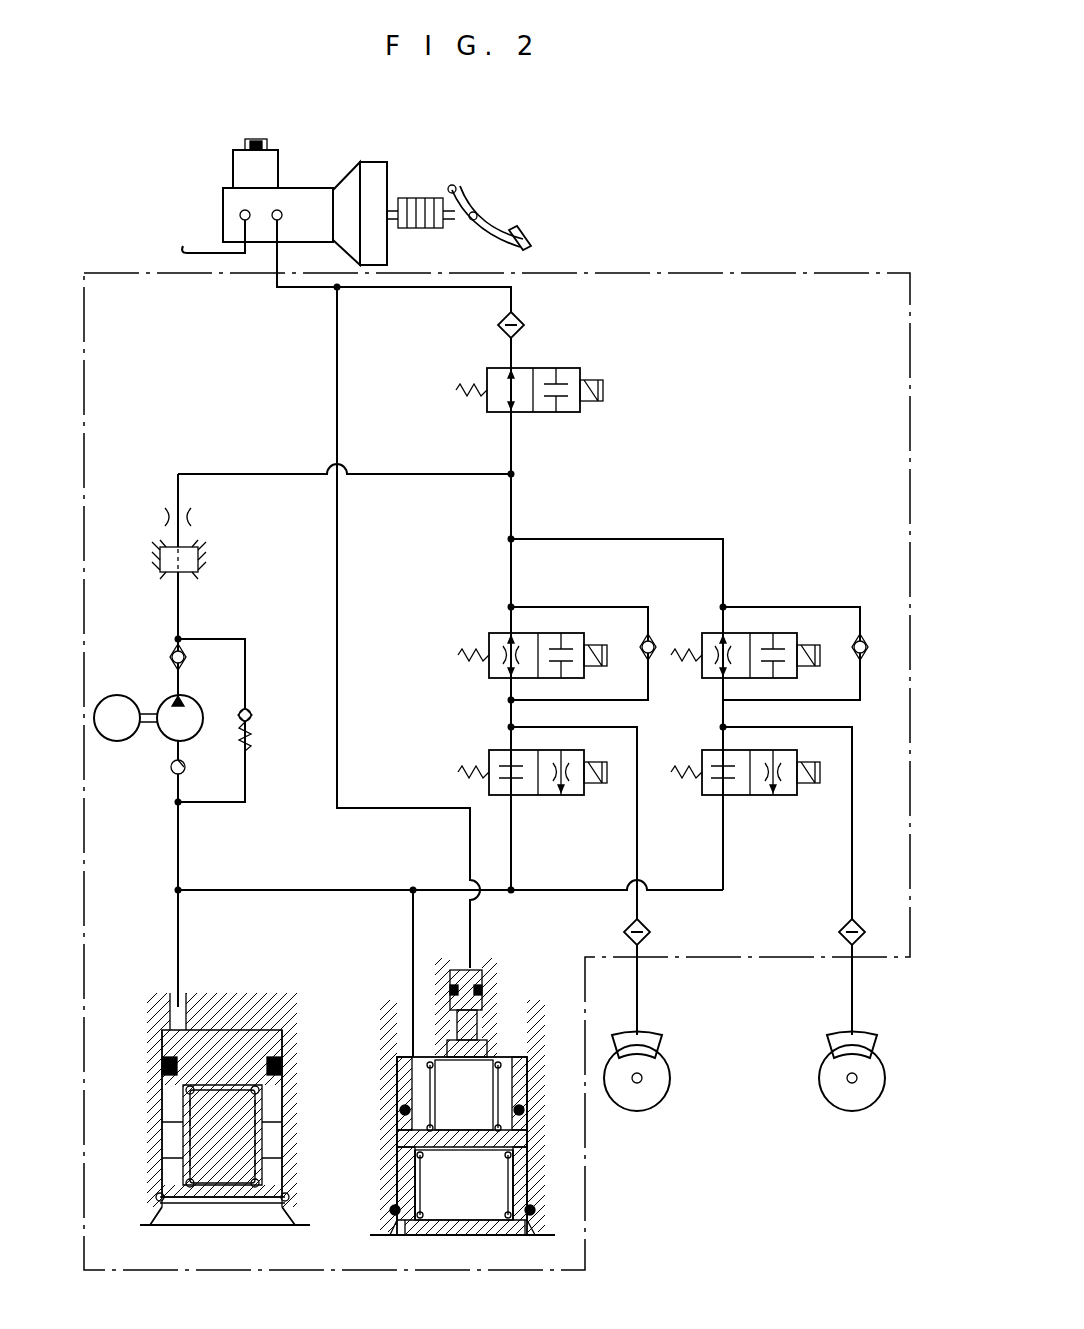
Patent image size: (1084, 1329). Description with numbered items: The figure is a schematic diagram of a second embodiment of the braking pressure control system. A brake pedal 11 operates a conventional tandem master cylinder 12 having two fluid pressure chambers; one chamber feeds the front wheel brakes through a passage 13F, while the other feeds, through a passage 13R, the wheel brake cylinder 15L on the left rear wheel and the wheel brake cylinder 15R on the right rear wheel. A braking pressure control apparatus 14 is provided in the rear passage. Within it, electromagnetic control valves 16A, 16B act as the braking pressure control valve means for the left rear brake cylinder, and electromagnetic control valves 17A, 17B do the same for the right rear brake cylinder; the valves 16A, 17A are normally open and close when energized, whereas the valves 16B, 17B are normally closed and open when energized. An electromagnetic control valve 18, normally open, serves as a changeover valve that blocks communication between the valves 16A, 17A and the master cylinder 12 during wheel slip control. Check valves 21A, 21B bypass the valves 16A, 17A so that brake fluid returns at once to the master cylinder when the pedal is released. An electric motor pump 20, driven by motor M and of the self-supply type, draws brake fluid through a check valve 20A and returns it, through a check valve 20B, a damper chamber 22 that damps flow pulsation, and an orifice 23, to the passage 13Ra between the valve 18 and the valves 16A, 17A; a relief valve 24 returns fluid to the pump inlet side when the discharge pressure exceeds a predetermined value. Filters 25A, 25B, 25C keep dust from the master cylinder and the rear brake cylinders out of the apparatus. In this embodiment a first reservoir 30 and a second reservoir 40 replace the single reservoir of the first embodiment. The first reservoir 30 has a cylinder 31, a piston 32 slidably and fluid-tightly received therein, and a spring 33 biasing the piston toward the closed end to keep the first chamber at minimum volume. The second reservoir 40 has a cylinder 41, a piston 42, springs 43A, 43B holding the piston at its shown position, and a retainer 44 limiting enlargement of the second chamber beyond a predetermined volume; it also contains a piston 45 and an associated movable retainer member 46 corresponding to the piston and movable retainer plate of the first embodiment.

The brake pedal 11 is at (497, 213).
The tandem master cylinder 12 is at (307, 188).
The passage 13F is at (205, 252).
The passage 13R is at (276, 258).
The passage 13Ra is at (513, 514).
The braking pressure control apparatus 14 is at (742, 273).
The wheel brake cylinder 15L is at (648, 1044).
The wheel brake cylinder 15R is at (860, 1050).
The electromagnetic control valve 16A is at (488, 630).
The electromagnetic control valve 16B is at (487, 750).
The electromagnetic control valve 17A is at (701, 678).
The electromagnetic control valve 17B is at (701, 797).
The electromagnetic control valve 18 is at (548, 415).
The electric motor pump 20 is at (150, 742).
The check valve 20A is at (172, 775).
The check valve 20B is at (170, 652).
The check valve 21A is at (652, 640).
The check valve 21B is at (862, 635).
The damper chamber 22 is at (200, 553).
The orifice 23 is at (195, 517).
The relief valve 24 is at (250, 708).
The filter 25A is at (520, 308).
The filter 25B is at (652, 932).
The filter 25C is at (843, 925).
The first reservoir 30 is at (234, 978).
The cylinder 31 is at (288, 1150).
The piston 32 is at (236, 1052).
The spring 33 is at (188, 1140).
The second reservoir 40 is at (386, 993).
The cylinder 41 is at (520, 1088).
The piston 42 is at (530, 1162).
The spring 43A is at (435, 1080).
The spring 43B is at (415, 1178).
The retainer 44 is at (532, 1200).
The piston 45 is at (490, 975).
The movable retainer member 46 is at (490, 1030).